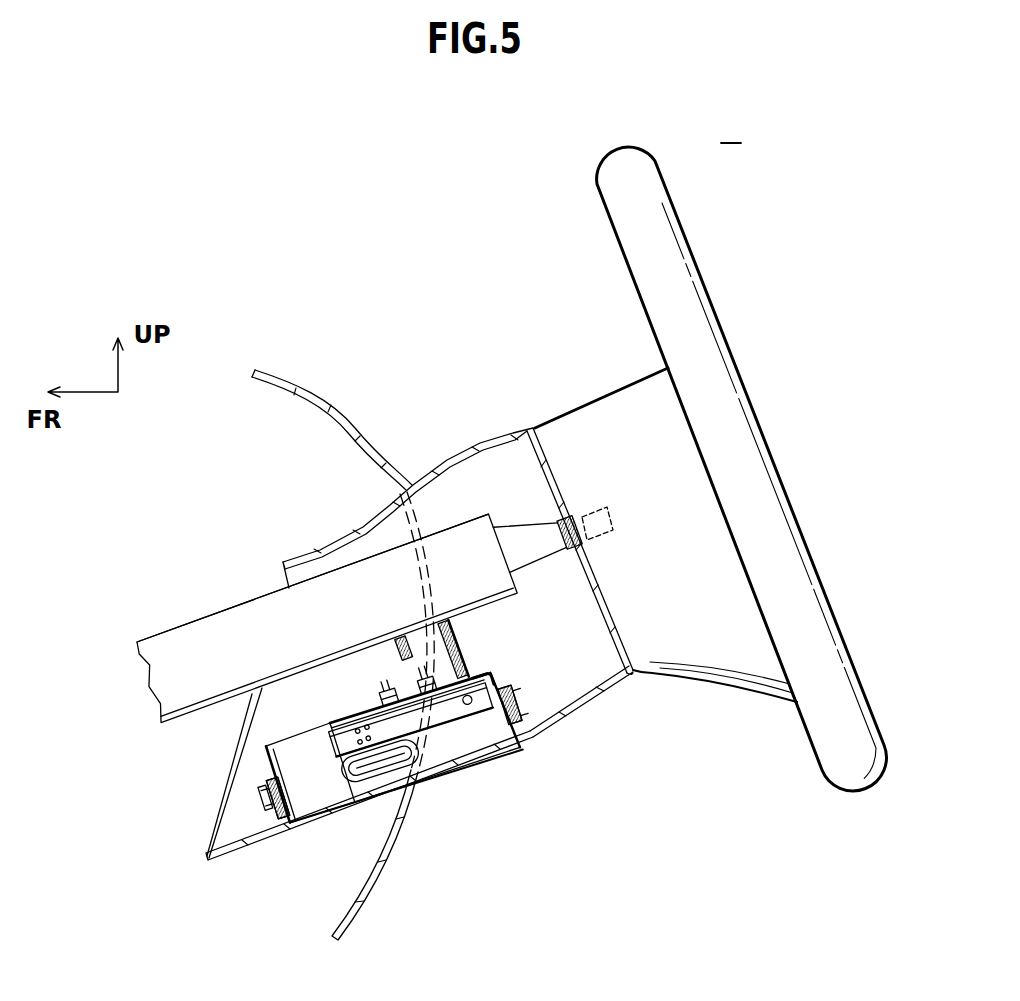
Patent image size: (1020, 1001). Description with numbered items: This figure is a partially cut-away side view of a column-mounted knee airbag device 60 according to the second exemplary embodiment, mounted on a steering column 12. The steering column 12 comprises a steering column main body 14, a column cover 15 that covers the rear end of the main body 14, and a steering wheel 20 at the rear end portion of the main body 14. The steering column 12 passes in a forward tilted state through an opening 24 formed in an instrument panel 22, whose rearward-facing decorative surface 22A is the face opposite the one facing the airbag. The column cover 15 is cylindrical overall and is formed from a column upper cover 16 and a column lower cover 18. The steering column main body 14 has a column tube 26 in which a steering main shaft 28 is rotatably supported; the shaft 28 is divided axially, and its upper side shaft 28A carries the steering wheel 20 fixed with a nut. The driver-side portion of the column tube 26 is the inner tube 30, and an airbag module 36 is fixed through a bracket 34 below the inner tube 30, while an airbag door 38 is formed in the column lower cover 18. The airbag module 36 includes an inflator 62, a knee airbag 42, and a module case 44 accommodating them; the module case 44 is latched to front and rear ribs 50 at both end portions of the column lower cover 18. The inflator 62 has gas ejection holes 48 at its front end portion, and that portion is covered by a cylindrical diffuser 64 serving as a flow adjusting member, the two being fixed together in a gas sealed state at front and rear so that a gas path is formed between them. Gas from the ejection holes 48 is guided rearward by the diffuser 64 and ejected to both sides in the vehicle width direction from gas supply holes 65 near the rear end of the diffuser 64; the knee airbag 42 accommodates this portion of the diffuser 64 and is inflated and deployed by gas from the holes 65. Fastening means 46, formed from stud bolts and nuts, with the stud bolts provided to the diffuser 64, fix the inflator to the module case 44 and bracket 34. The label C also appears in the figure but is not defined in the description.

The steering column 12 is at (710, 469).
The steering wheel 20 is at (722, 376).
The steering column main body 14 is at (182, 588).
The column cover 15 is at (463, 454).
The column upper cover 16 is at (510, 436).
The column lower cover 18 is at (607, 607).
The instrument panel 22 is at (327, 426).
The decorative surface 22A is at (402, 841).
The opening 24 is at (463, 476).
The column tube 26 is at (258, 597).
The inner tube 30 is at (312, 566).
The steering main shaft 28 is at (541, 512).
The upper side shaft 28A is at (543, 531).
The bracket 34 is at (453, 641).
The airbag module 36 is at (532, 690).
The airbag door 38 is at (368, 801).
The knee airbag 42 is at (441, 751).
The module case 44 is at (268, 786).
The fastening means 46 is at (410, 658).
The gas ejection holes 48 is at (345, 718).
The ribs 50 is at (526, 701).
The column-mounted knee airbag device 60 is at (361, 827).
The inflator 62 is at (328, 745).
The diffuser 64 is at (470, 731).
The gas supply holes 65 is at (495, 682).
The steering axis C is at (731, 129).